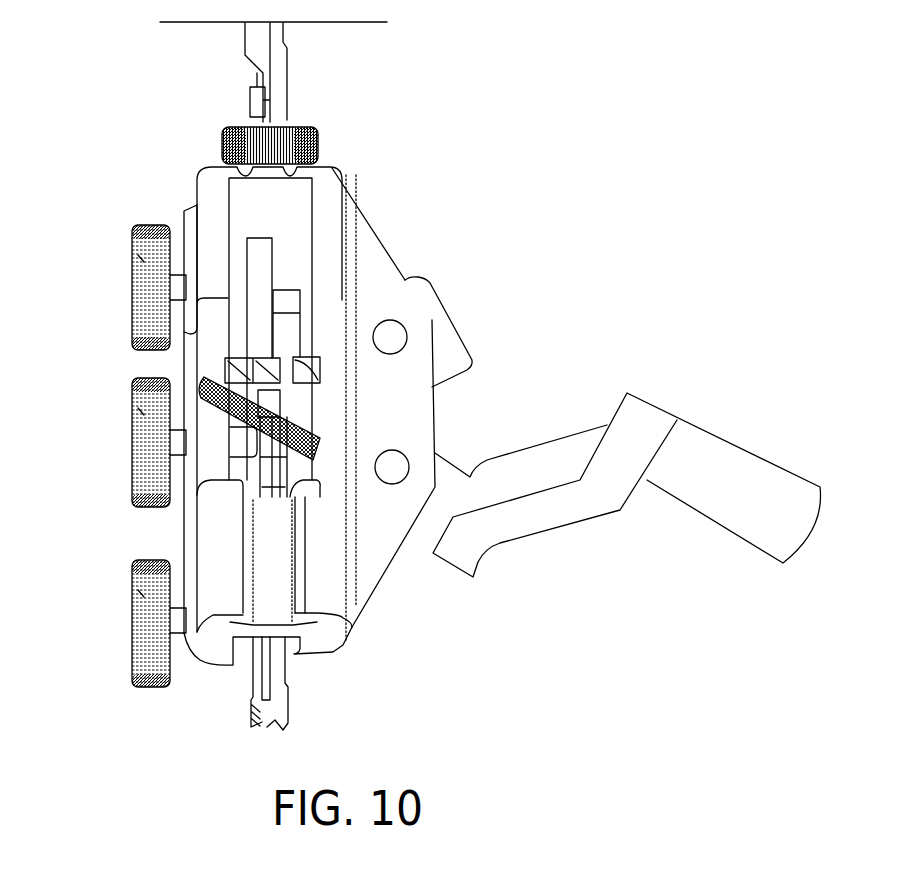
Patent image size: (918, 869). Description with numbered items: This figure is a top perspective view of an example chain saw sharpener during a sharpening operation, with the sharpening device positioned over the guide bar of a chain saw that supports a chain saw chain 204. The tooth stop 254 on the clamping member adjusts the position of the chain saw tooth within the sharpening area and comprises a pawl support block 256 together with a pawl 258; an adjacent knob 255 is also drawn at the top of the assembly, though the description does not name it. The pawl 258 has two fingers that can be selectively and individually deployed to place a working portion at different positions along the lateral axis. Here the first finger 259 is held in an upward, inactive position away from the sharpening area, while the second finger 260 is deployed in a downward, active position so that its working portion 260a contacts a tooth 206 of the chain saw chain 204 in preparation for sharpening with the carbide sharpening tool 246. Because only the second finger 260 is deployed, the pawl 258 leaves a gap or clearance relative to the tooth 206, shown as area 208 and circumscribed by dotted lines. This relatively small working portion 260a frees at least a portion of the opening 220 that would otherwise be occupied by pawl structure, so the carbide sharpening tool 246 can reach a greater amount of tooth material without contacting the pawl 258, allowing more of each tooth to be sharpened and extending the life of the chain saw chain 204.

The chain saw chain 204 is at (245, 47).
The adjustment knob 255 is at (300, 130).
The tooth stop 254 is at (334, 162).
The pawl support block 256 is at (287, 212).
The first finger 259 is at (258, 277).
The pawl 258 is at (299, 281).
The tooth 206 is at (280, 398).
The carbide sharpening tool 246 is at (320, 426).
The area 208 is at (280, 363).
The opening 220 is at (224, 433).
The second finger 260 is at (287, 332).
The working portion 260a is at (403, 297).